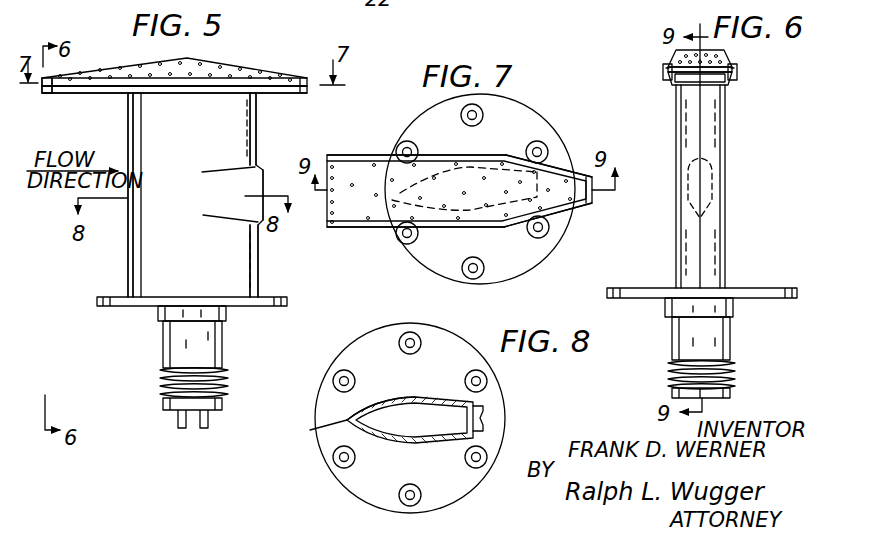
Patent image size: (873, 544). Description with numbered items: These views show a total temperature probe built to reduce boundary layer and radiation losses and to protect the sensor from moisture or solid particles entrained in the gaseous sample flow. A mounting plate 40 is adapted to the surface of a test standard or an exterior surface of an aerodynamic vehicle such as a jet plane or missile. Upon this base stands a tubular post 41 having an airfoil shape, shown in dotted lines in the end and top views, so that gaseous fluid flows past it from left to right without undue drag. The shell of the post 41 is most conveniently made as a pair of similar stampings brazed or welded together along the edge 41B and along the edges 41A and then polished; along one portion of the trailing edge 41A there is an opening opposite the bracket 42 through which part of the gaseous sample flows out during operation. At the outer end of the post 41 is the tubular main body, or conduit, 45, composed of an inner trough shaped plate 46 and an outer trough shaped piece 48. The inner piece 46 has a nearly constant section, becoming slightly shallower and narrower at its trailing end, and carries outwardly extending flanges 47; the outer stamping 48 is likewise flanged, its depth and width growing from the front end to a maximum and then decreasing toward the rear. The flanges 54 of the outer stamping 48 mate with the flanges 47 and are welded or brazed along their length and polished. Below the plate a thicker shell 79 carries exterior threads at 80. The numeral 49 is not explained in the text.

In FIG. 5, the mounting plate 40 is at (130, 305).
In FIG. 7, the mounting plate 40 is at (435, 265).
In FIG. 8, the mounting plate 40 is at (410, 418).
In FIG. 6, the mounting plate 40 is at (745, 290).
In FIG. 5, the post 41 is at (137, 143).
In FIG. 7, the post 41 is at (446, 214).
In FIG. 8, the post 41 is at (410, 398).
In FIG. 6, the post 41 is at (722, 225).
In FIG. 5, the trailing edge 41A is at (258, 130).
In FIG. 7, the trailing edge 41A is at (556, 215).
In FIG. 5, the edge 41B is at (130, 262).
In FIG. 7, the edge 41B is at (416, 191).
In FIG. 8, the edge 41B is at (366, 421).
In FIG. 5, the bracket 42 is at (264, 178).
In FIG. 7, the bracket 42 is at (464, 188).
In FIG. 8, the bracket 42 is at (480, 420).
In FIG. 6, the bracket 42 is at (720, 181).
In FIG. 5, the tubular main body 45 is at (202, 60).
In FIG. 5, the inner trough shaped plate 46 is at (103, 93).
In FIG. 6, the inner trough shaped plate 46 is at (715, 85).
In FIG. 5, the outwardly extending flanges 47 is at (78, 94).
In FIG. 6, the outwardly extending flanges 47 is at (668, 84).
In FIG. 5, the outer trough shaped piece 48 is at (135, 73).
In FIG. 6, the top cap of head 49 is at (666, 66).
In FIG. 5, the flanges 54 is at (48, 80).
In FIG. 6, the flanges 54 is at (663, 74).
In FIG. 5, the thicker shell 79 is at (212, 343).
In FIG. 6, the thicker shell 79 is at (715, 335).
In FIG. 5, the exterior threads 80 is at (165, 380).
In FIG. 6, the exterior threads 80 is at (735, 371).